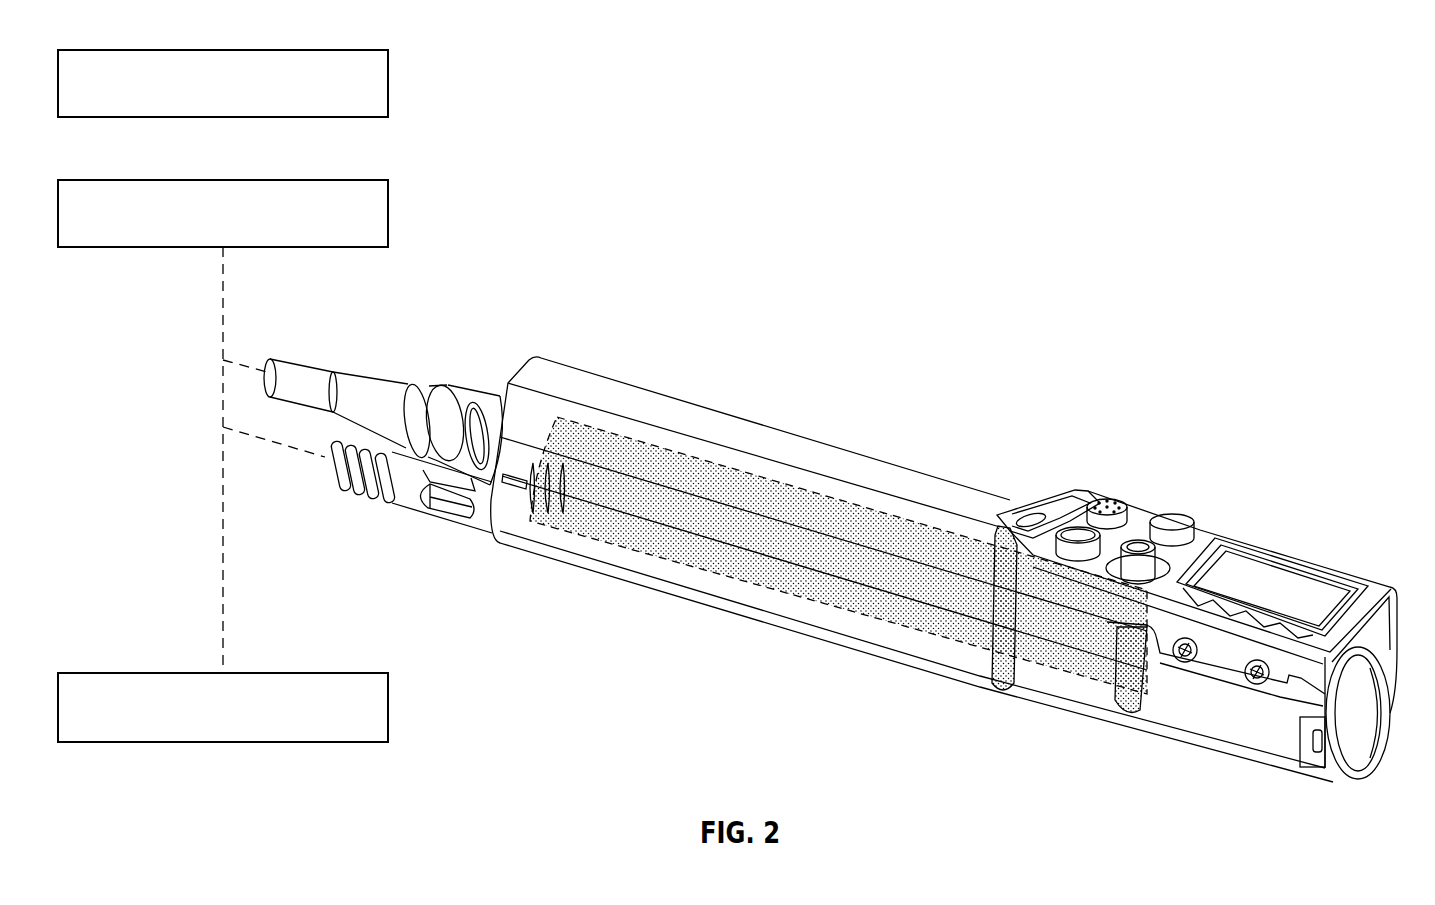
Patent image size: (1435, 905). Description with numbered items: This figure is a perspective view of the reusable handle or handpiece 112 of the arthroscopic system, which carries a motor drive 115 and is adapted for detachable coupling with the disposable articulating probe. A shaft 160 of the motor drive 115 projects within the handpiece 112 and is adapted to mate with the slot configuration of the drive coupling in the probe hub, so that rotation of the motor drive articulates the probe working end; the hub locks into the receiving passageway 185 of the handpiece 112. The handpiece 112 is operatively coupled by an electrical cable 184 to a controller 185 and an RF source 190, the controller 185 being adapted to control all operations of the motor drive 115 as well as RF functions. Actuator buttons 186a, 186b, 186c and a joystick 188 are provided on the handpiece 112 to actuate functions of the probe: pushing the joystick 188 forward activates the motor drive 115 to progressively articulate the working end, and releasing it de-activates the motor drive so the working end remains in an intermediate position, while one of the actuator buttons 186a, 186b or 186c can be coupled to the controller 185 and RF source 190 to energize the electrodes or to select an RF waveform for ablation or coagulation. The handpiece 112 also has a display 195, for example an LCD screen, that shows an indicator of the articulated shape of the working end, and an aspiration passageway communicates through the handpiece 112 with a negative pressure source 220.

The handpiece 112 is at (863, 553).
The motor drive 115 is at (893, 627).
The shaft 160 is at (1118, 652).
The electrical cable 184 is at (300, 372).
The controller 185 is at (121, 180).
The actuator button 186a is at (1080, 527).
The actuator button 186b is at (1110, 501).
The actuator button 186c is at (1182, 519).
The joystick 188 is at (1137, 547).
The RF source 190 is at (121, 50).
The display 195 is at (1265, 567).
The negative pressure source 220 is at (121, 673).